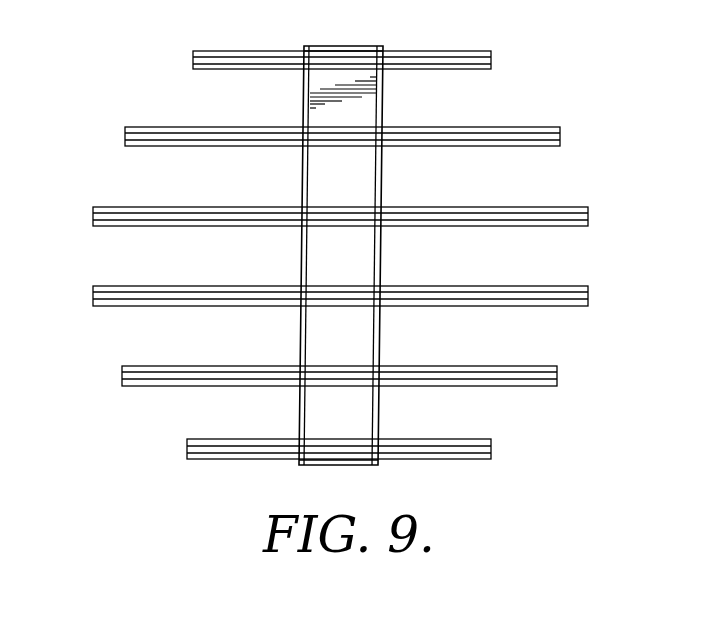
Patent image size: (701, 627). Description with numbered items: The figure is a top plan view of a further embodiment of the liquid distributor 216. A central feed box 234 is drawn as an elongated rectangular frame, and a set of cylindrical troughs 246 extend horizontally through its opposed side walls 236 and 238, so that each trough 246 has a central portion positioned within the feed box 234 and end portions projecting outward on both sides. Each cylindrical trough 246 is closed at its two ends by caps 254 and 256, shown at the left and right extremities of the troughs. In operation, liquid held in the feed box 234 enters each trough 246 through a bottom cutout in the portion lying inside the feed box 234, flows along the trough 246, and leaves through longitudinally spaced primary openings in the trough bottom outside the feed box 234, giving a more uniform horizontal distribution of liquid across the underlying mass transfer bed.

The liquid distributor 216 is at (531, 127).
The feed box 234 is at (343, 255).
The side wall 236 is at (374, 266).
The side wall 238 is at (305, 252).
The cylindrical trough 246 is at (335, 350).
The cap 254 is at (335, 390).
The cap 256 is at (122, 381).